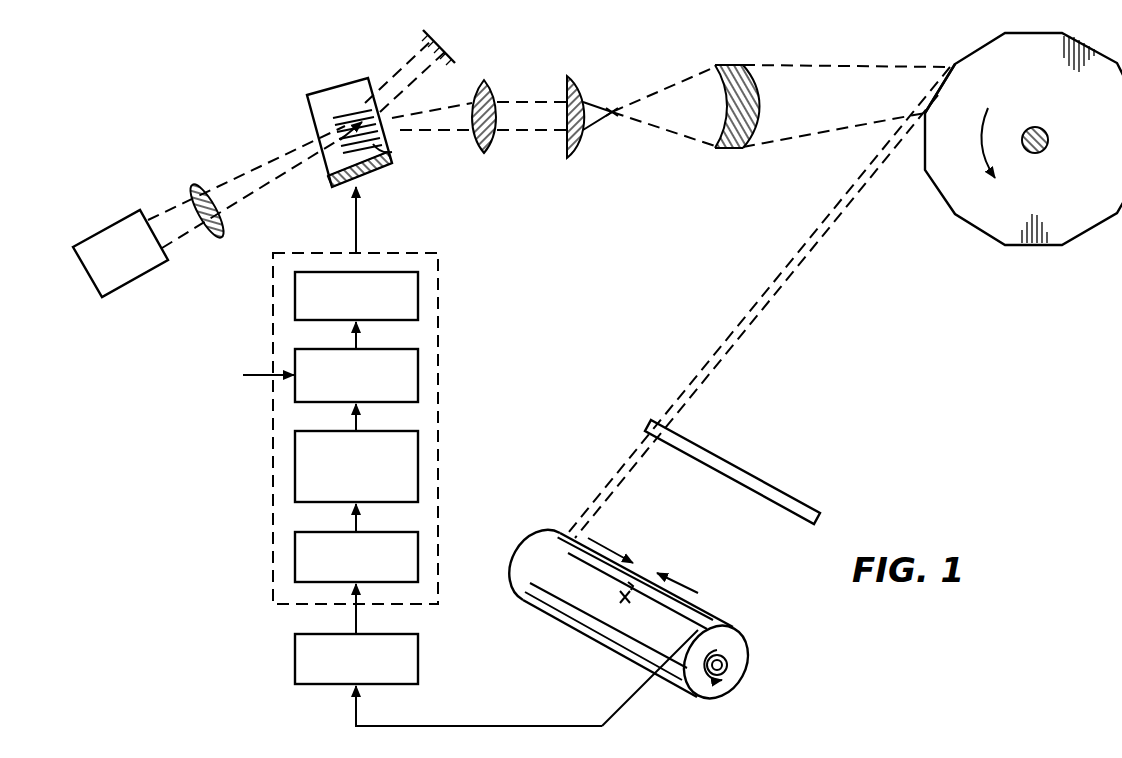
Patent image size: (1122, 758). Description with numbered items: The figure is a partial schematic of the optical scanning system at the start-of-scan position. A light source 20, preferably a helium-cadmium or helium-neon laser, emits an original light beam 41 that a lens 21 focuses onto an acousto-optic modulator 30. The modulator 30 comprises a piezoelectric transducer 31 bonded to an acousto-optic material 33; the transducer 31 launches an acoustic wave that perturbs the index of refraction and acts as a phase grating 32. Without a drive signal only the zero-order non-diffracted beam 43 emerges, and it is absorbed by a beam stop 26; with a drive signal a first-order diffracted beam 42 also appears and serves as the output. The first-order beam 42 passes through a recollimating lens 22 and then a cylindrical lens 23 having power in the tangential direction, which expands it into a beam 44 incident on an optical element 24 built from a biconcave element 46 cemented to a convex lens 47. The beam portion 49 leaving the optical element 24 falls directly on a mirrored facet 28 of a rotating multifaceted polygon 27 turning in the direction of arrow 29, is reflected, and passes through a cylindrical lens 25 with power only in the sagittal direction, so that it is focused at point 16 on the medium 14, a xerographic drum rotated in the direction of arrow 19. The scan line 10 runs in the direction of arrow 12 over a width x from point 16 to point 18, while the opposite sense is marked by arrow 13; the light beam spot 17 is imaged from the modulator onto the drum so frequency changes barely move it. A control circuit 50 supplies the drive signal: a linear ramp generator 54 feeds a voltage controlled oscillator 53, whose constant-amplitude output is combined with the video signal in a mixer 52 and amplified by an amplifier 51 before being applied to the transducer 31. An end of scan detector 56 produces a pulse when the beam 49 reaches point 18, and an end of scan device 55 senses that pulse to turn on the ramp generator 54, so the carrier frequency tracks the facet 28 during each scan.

The scan line 10 is at (649, 612).
The arrow 12 is at (612, 547).
The return direction arrow 13 is at (682, 577).
The medium 14 is at (593, 630).
The point 16 is at (565, 530).
The light beam spot 17 is at (612, 109).
The point 18 is at (714, 618).
The arrow 19 is at (741, 636).
The light source 20 is at (128, 282).
The lens 21 is at (209, 185).
The recollimating lens 22 is at (485, 84).
The cylindrical lens 23 is at (566, 90).
The optical element 24 is at (734, 79).
The cylindrical lens 25 is at (766, 482).
The beam stop 26 is at (448, 42).
The rotating multifaceted polygon 27 is at (1003, 139).
The facet 28 is at (944, 90).
The arrow 29 is at (979, 138).
The acousto-optic modulator 30 is at (345, 131).
The piezoelectric transducer 31 is at (379, 178).
The phase grating 32 is at (393, 153).
The acousto-optic material 33 is at (306, 121).
The light beam 41 is at (166, 207).
The first-order diffracted beam 42 is at (435, 110).
The zero-order non-diffracted beam 43 is at (392, 73).
The beam 44 is at (673, 134).
The biconcave element 46 is at (733, 64).
The convex lens 47 is at (759, 98).
The beam portion 49 is at (833, 210).
The control circuit 50 is at (307, 395).
The amplifier 51 is at (388, 320).
The mixer 52 is at (385, 403).
The voltage controlled oscillator 53 is at (384, 504).
The linear ramp generator 54 is at (332, 531).
The end of scan device 55 is at (420, 644).
The end of scan detector 56 is at (692, 632).